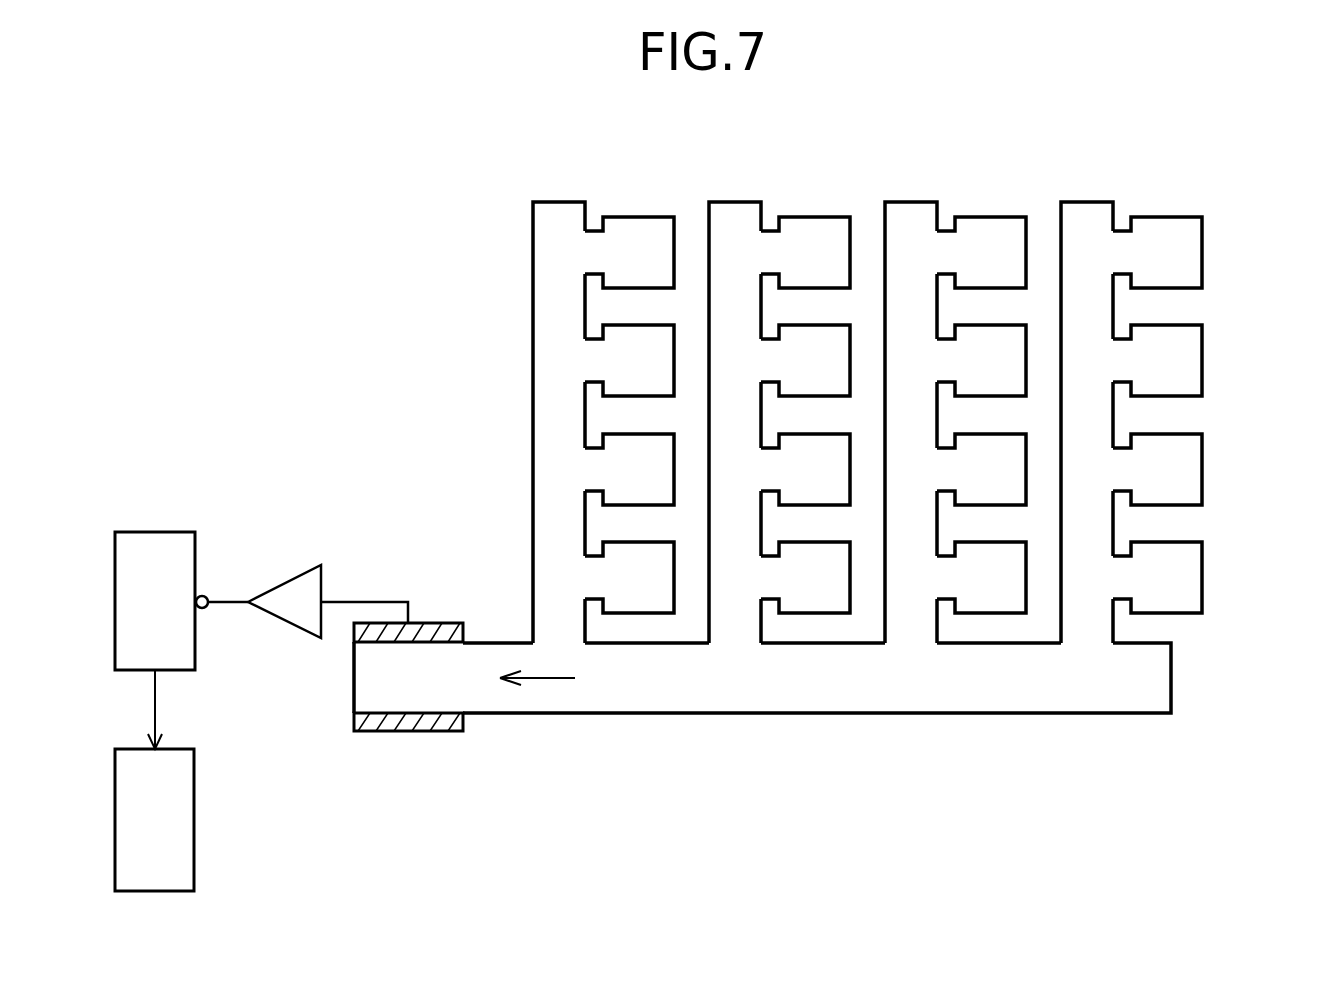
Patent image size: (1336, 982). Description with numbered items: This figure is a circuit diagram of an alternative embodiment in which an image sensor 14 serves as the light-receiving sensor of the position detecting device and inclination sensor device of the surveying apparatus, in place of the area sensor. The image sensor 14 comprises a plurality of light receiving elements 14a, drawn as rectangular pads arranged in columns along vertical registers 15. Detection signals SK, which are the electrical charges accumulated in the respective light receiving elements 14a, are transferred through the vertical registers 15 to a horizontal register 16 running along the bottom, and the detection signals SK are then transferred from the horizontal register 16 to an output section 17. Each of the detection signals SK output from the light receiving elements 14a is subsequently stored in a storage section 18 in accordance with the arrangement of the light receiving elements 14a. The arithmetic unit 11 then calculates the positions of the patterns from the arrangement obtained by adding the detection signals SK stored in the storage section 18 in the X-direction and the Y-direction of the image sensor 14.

The arithmetic unit 11 is at (191, 824).
The image sensor 14 is at (830, 455).
The light receiving elements 14a is at (625, 350).
The vertical registers 15 is at (541, 417).
The horizontal register 16 is at (735, 680).
The output section 17 is at (402, 730).
The storage section 18 is at (152, 532).
The detection signals SK is at (541, 680).